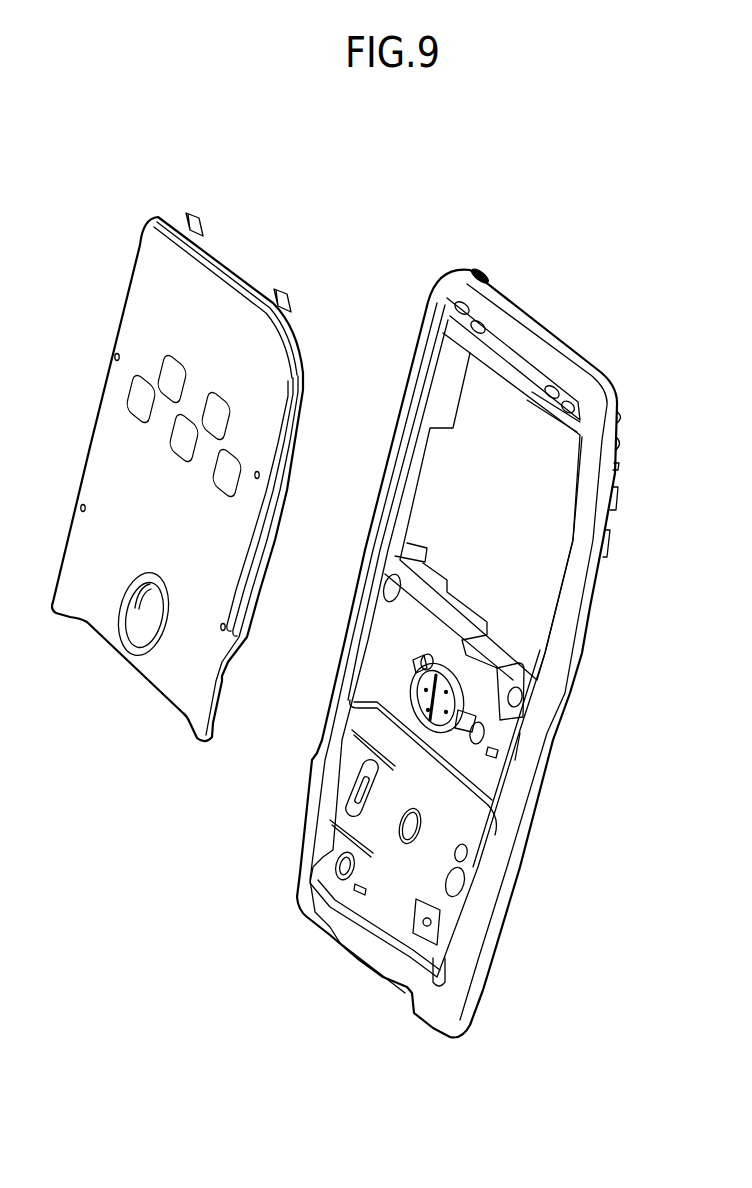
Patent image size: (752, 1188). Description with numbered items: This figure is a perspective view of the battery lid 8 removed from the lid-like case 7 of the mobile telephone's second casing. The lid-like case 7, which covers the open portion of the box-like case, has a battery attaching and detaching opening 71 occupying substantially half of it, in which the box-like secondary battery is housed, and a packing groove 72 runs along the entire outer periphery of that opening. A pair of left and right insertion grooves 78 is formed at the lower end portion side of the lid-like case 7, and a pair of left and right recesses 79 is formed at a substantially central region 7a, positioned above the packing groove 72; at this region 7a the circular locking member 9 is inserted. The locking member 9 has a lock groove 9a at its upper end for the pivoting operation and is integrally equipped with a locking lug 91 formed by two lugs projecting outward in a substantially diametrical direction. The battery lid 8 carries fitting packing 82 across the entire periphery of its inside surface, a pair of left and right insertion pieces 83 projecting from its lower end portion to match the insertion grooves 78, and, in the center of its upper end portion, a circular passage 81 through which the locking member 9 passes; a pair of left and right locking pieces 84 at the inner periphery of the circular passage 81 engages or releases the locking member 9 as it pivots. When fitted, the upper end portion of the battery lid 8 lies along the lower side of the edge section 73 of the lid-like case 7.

The lid-like case 7 is at (495, 910).
The region 7a is at (520, 767).
The battery lid 8 is at (108, 447).
The locking member 9 is at (433, 703).
The lock groove 9a is at (440, 687).
The battery attaching and detaching opening 71 is at (555, 563).
The packing groove 72 is at (418, 410).
The edge section 73 is at (420, 747).
The insertion grooves 78 is at (450, 307).
The recesses 79 is at (433, 655).
The circular passage 81 is at (143, 630).
The fitting packing 82 is at (278, 507).
The insertion pieces 83 is at (192, 212).
The locking pieces 84 is at (140, 605).
The locking lug 91 is at (412, 667).